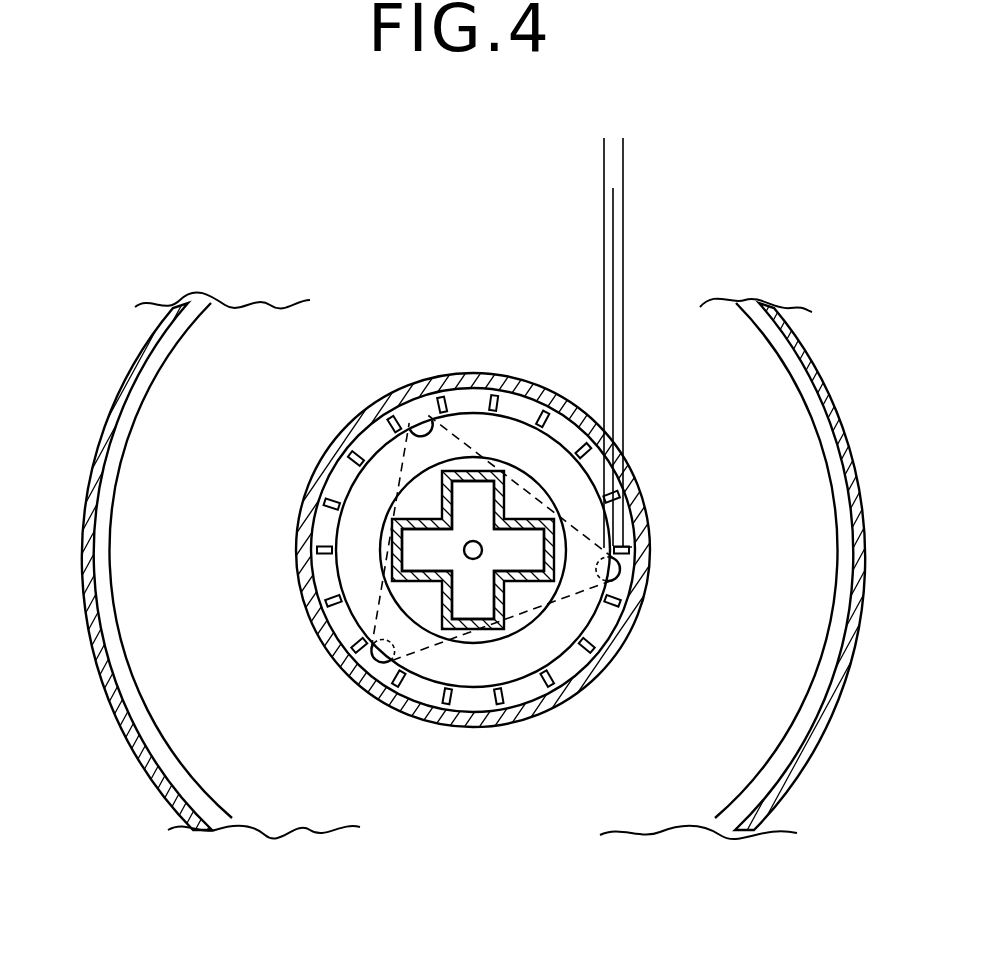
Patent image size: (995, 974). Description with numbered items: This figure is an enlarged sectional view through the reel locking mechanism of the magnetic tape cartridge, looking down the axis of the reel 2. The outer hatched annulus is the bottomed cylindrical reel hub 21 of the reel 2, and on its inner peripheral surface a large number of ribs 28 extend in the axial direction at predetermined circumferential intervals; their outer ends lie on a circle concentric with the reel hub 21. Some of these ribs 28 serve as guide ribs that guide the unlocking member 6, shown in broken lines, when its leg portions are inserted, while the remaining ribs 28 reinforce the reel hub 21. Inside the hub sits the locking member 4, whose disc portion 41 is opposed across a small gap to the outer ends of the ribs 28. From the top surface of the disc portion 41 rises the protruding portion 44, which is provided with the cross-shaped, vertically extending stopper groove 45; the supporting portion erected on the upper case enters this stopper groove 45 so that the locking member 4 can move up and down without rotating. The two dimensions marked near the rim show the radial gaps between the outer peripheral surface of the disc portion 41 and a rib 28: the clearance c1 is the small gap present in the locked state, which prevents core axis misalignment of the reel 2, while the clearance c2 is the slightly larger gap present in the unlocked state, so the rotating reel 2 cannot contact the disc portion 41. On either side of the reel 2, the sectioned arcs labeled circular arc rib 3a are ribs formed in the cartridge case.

The reel 2 is at (466, 565).
The circular arc rib 3a is at (94, 542).
The locking member 4 is at (517, 680).
The unlocking member 6 is at (577, 597).
The reel hub 21 is at (647, 530).
The ribs 28 is at (620, 496).
The disc portion 41 is at (510, 440).
The protruding portion 44 is at (409, 530).
The stopper groove 45 is at (413, 550).
The clearance c1 is at (573, 220).
The clearance c2 is at (573, 155).